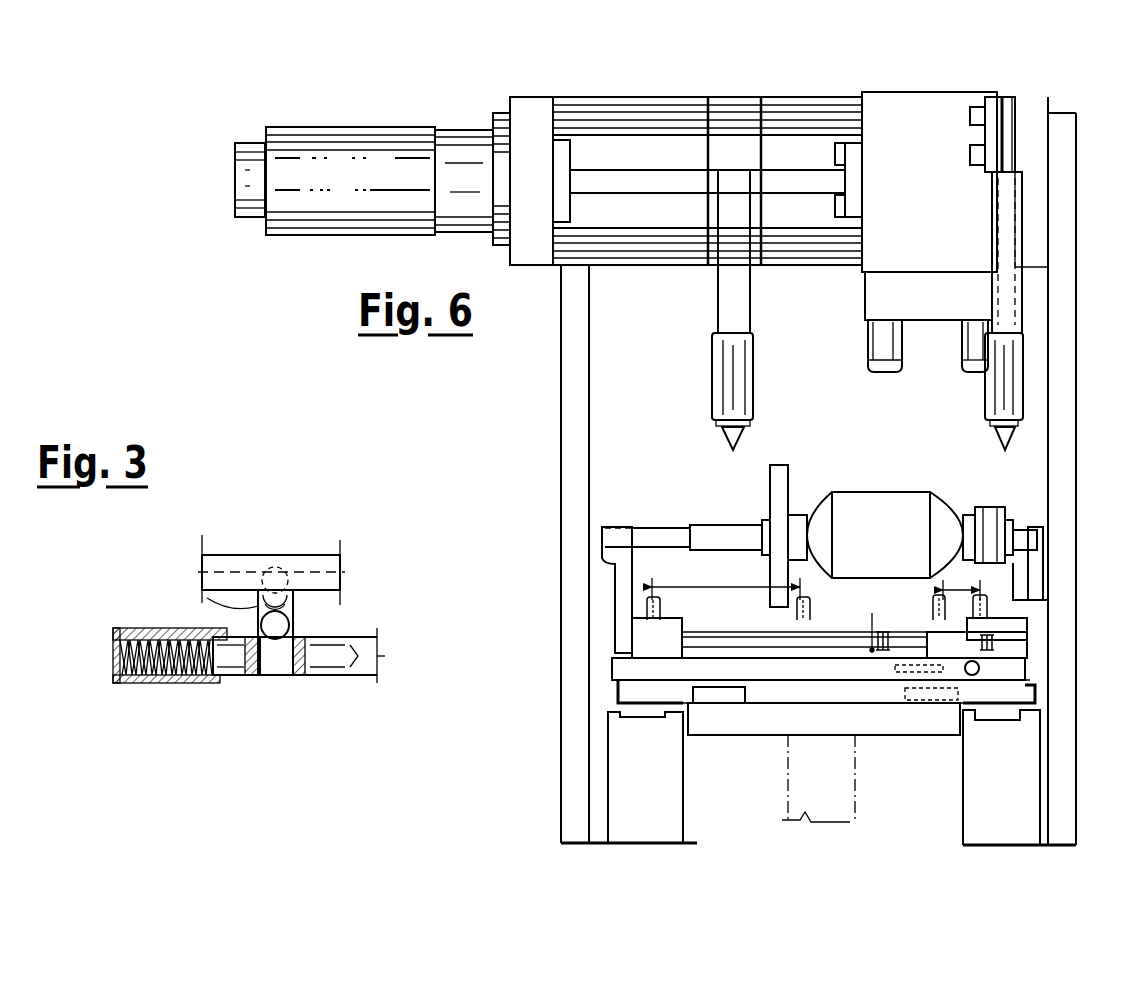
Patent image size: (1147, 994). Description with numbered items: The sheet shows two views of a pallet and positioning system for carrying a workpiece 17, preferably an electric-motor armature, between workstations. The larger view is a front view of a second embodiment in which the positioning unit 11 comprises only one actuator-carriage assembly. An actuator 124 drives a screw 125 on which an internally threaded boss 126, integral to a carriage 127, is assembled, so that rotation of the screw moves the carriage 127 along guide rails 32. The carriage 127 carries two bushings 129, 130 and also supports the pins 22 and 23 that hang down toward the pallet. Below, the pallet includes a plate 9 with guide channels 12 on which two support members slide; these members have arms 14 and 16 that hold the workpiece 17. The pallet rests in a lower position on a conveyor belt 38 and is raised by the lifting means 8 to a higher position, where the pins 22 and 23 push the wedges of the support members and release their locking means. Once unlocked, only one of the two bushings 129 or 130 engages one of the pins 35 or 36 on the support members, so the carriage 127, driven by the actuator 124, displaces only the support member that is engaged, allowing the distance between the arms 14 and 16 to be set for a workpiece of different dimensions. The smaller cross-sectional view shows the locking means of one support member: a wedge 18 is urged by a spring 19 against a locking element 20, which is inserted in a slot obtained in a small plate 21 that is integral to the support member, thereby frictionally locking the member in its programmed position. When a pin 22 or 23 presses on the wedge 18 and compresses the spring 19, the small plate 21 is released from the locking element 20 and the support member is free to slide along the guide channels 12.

In FIG. 6, the lifting means 8 is at (737, 718).
In FIG. 6, the plate 9 is at (780, 695).
In FIG. 6, the positioning unit 11 is at (681, 78).
In FIG. 6, the guide channels 12 is at (847, 670).
In FIG. 6, the arm 14 is at (620, 610).
In FIG. 6, the arm 16 is at (1020, 606).
In FIG. 6, the workpiece 17 is at (885, 510).
In FIG. 3, the wedge 18 is at (237, 676).
In FIG. 3, the spring 19 is at (152, 682).
In FIG. 3, the locking element 20 is at (265, 627).
In FIG. 3, the small plate 21 is at (225, 560).
In FIG. 6, the pin 22 is at (722, 385).
In FIG. 6, the pin 23 is at (1003, 395).
In FIG. 6, the guide rail 32 is at (776, 115).
In FIG. 6, the pin 35 is at (648, 595).
In FIG. 6, the pin 36 is at (932, 608).
In FIG. 6, the conveyor belt 38 is at (660, 813).
In FIG. 6, the actuator 124 is at (331, 145).
In FIG. 6, the screw 125 is at (634, 150).
In FIG. 6, the internally threaded boss 126 is at (853, 152).
In FIG. 6, the carriage 127 is at (935, 118).
In FIG. 6, the bushing 129 is at (868, 338).
In FIG. 6, the bushing 130 is at (965, 340).